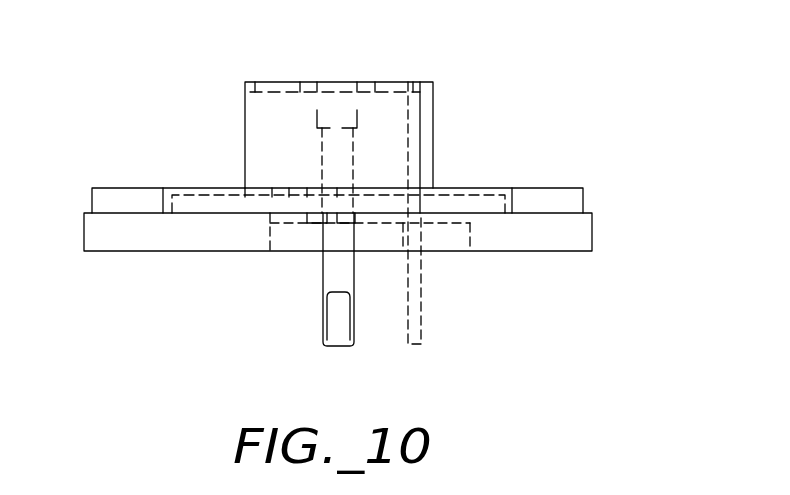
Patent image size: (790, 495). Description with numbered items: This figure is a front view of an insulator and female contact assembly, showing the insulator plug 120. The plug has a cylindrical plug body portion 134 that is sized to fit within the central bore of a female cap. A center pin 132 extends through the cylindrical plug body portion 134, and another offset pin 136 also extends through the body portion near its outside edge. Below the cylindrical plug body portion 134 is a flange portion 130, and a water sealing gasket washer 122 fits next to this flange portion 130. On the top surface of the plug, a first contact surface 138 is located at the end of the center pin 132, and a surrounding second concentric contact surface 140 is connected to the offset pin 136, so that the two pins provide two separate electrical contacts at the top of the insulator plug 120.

The insulator plug 120 is at (457, 138).
The water sealing gasket washer 122 is at (558, 192).
The flange portion 130 is at (592, 225).
The center pin 132 is at (323, 335).
The cylindrical plug body portion 134 is at (244, 141).
The offset pin 136 is at (413, 347).
The first contact surface 138 is at (337, 81).
The second concentric contact surface 140 is at (390, 81).